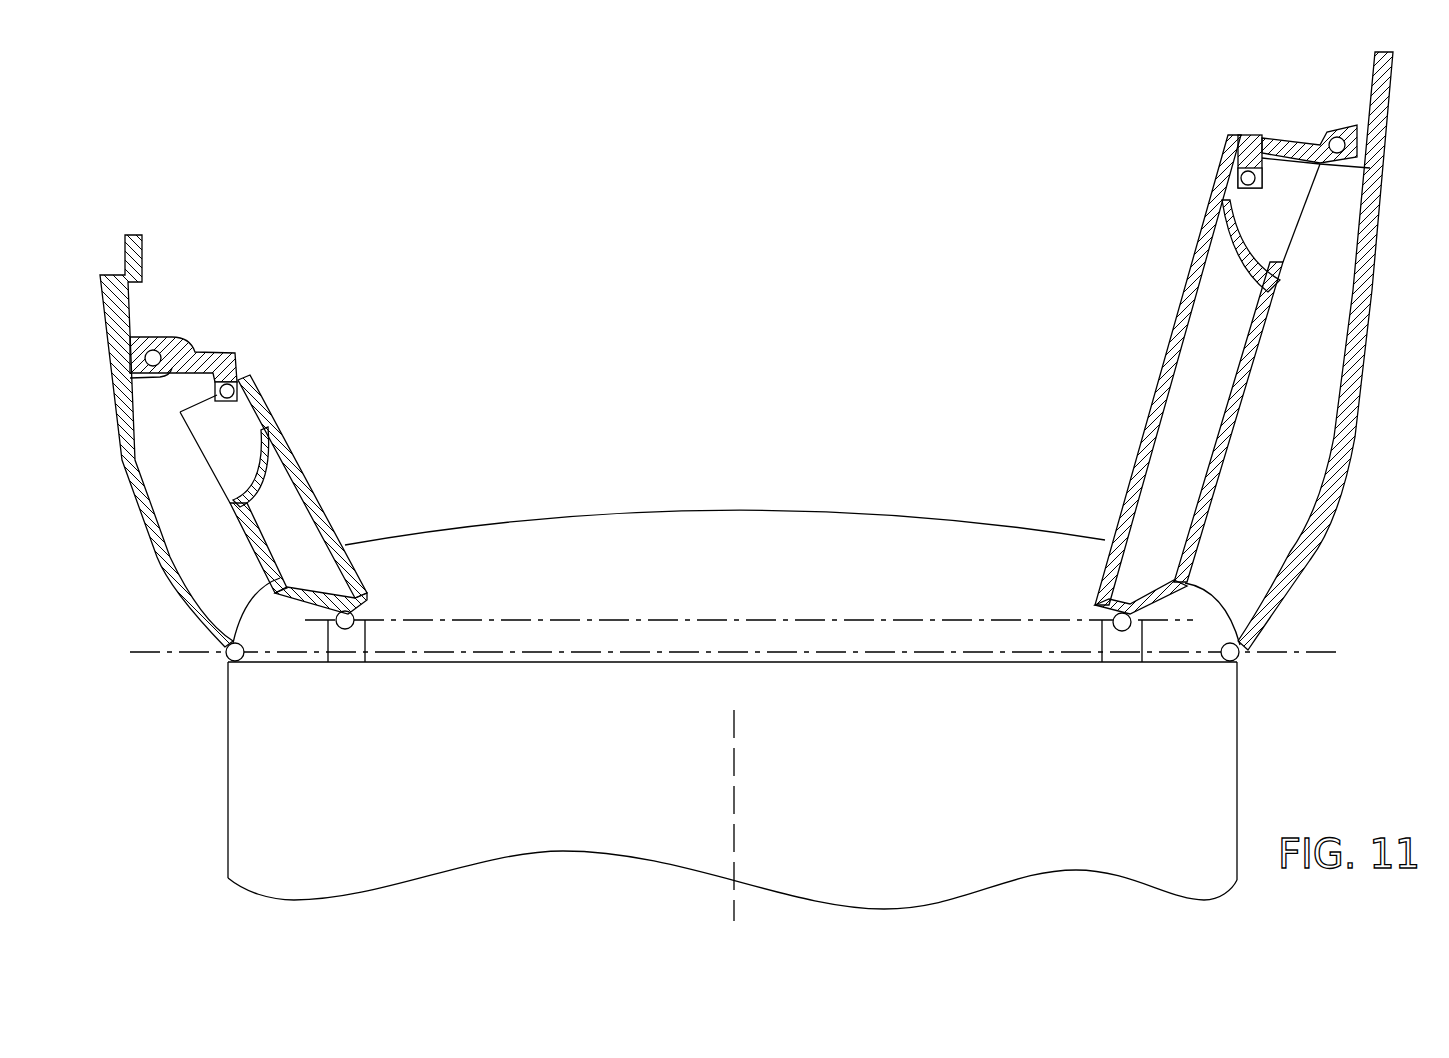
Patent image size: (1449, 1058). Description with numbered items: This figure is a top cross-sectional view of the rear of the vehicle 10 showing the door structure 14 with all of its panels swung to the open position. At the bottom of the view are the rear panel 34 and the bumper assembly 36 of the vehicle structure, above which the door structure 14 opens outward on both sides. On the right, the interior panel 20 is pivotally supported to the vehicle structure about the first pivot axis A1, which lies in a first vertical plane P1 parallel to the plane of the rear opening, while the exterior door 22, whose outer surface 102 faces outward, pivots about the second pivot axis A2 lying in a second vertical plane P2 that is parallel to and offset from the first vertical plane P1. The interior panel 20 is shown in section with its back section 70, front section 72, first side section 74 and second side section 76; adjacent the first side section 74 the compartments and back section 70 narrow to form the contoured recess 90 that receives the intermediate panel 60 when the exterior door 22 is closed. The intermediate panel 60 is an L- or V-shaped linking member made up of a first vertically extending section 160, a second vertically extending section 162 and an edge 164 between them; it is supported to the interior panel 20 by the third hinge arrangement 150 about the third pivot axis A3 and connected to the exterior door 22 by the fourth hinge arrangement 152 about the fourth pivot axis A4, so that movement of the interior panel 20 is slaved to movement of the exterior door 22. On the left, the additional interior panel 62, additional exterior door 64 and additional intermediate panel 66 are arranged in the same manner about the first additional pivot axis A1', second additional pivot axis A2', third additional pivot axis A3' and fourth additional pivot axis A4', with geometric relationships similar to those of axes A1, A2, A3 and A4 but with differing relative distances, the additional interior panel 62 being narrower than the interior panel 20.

The vehicle 10 is at (434, 162).
The door structure 14 is at (1158, 120).
The interior panel 20 is at (1153, 370).
The exterior door 22 is at (1331, 351).
The rear panel 34 is at (793, 661).
The bumper assembly 36 is at (659, 558).
The intermediate panel 60 is at (1294, 143).
The additional interior panel 62 is at (304, 482).
The additional exterior door 64 is at (145, 478).
The additional intermediate panel 66 is at (197, 370).
The back section 70 is at (1238, 413).
The front section 72 is at (1152, 403).
The first side section 74 is at (1234, 134).
The second side section 76 is at (1096, 610).
The contoured recess 90 is at (1243, 248).
The outer surface 102 is at (1376, 305).
The third hinge arrangement 150 is at (1197, 187).
The fourth hinge arrangement 152 is at (1352, 114).
The first vertically extending section 160 is at (1260, 190).
The second vertically extending section 162 is at (1316, 99).
The edge 164 is at (1240, 132).
The first pivot axis A1 is at (1115, 661).
The second pivot axis A2 is at (1201, 672).
The third pivot axis A3 is at (1296, 185).
The fourth pivot axis A4 is at (1331, 116).
The first additional pivot axis A1' is at (352, 658).
The second additional pivot axis A2' is at (252, 687).
The third additional pivot axis A3' is at (192, 419).
The fourth additional pivot axis A4' is at (165, 326).
The first vertical plane P1 is at (932, 619).
The second vertical plane P2 is at (1020, 651).